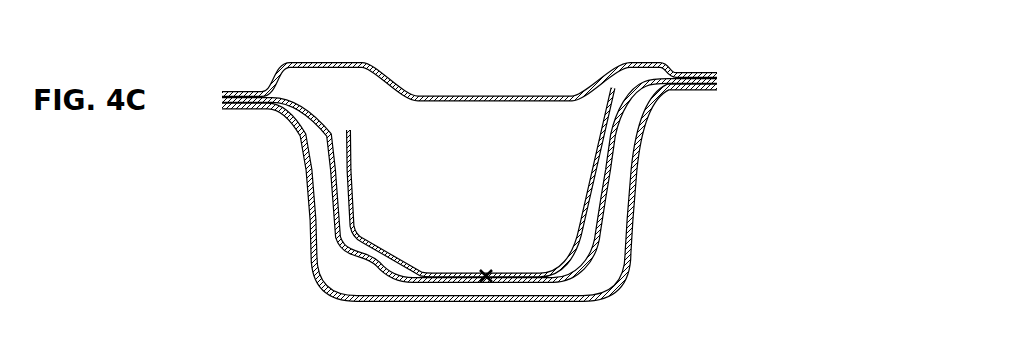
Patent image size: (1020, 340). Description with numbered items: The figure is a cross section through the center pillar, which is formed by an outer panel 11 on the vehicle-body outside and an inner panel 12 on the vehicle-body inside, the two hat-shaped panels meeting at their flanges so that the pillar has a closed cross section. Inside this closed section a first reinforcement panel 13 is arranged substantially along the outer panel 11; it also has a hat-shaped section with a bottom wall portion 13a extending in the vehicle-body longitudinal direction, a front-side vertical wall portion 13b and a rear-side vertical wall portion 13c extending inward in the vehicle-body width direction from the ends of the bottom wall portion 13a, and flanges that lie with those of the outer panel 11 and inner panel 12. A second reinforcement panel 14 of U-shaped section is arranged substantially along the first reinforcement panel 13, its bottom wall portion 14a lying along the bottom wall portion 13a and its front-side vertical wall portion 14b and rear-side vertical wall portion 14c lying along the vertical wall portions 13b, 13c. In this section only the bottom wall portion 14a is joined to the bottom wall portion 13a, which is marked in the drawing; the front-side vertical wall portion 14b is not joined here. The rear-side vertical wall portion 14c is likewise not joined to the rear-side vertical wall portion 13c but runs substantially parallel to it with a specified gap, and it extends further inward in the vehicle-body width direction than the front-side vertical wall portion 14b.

The outer panel 11 is at (631, 247).
The inner panel 12 is at (343, 62).
The first reinforcement panel 13 is at (469, 210).
The bottom wall portion 13a is at (529, 284).
The front-side vertical wall portion 13b is at (337, 218).
The rear-side vertical wall portion 13c is at (614, 187).
The second reinforcement panel 14 is at (481, 185).
The bottom wall portion 14a is at (499, 273).
The front-side vertical wall portion 14b is at (353, 136).
The rear-side vertical wall portion 14c is at (594, 167).